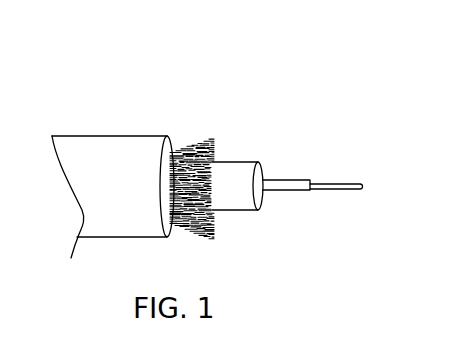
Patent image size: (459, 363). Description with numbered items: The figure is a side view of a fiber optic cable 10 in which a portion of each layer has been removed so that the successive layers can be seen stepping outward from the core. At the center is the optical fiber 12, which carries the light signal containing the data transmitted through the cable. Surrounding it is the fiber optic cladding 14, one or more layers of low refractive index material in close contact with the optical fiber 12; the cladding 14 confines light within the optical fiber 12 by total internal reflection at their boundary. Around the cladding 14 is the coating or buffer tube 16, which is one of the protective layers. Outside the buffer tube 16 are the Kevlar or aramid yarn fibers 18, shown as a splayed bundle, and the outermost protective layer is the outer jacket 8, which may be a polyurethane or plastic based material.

The fiber optic cable 10 is at (232, 54).
The outer jacket 8 is at (128, 148).
The aramid yarn 18 is at (205, 236).
The buffer tube 16 is at (240, 172).
The fiber optic cladding 14 is at (298, 179).
The central optical fiber 12 is at (342, 190).